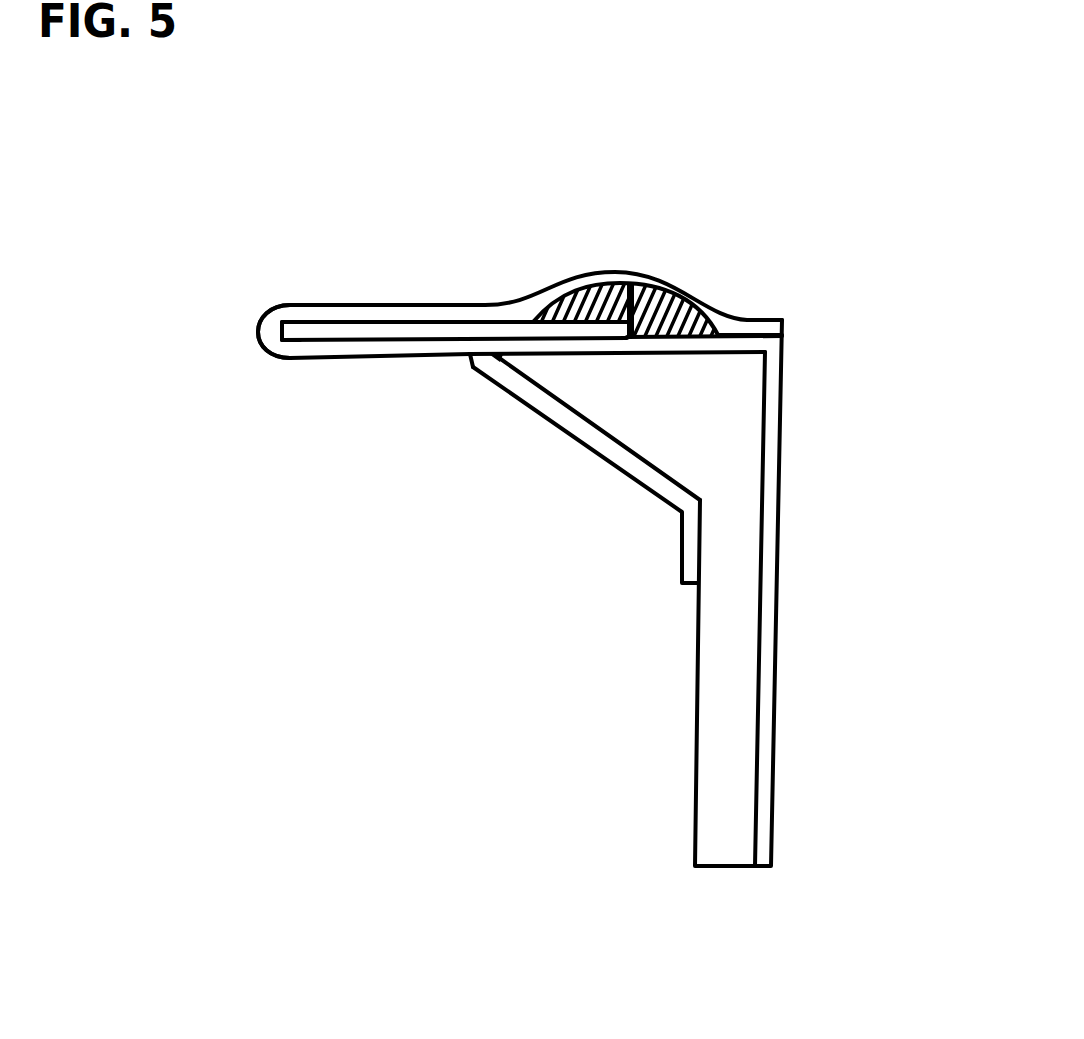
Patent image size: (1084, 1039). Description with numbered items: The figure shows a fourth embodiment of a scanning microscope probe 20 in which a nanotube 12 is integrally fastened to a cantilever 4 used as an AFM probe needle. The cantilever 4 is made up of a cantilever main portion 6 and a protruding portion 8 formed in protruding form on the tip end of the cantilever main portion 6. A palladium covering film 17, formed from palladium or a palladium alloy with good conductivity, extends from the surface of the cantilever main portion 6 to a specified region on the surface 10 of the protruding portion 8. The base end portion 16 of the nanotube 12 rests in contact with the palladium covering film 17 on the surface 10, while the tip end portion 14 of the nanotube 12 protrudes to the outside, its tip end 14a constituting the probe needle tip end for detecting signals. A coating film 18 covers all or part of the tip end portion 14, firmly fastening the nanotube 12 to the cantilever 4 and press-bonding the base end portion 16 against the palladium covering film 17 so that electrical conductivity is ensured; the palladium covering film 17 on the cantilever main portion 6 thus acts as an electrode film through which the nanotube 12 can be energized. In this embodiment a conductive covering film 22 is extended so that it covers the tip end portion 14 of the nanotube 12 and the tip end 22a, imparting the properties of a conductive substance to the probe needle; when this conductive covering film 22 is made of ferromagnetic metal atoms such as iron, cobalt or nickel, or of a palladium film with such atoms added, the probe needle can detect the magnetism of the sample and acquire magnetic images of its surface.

The cantilever 4 is at (714, 601).
The cantilever main portion 6 is at (727, 598).
The protruding portion 8 is at (650, 416).
The surface of the protruding portion 10 is at (667, 357).
The nanotube 12 is at (535, 480).
The tip end portion 14 is at (454, 422).
The tip end 14a is at (284, 332).
The base end portion 16 is at (562, 331).
The palladium covering film 17 is at (772, 375).
The coating film 18 is at (632, 272).
The scanning microscope probe 20 is at (600, 325).
The conductive covering film 22 is at (535, 507).
The tip end 22a is at (272, 337).